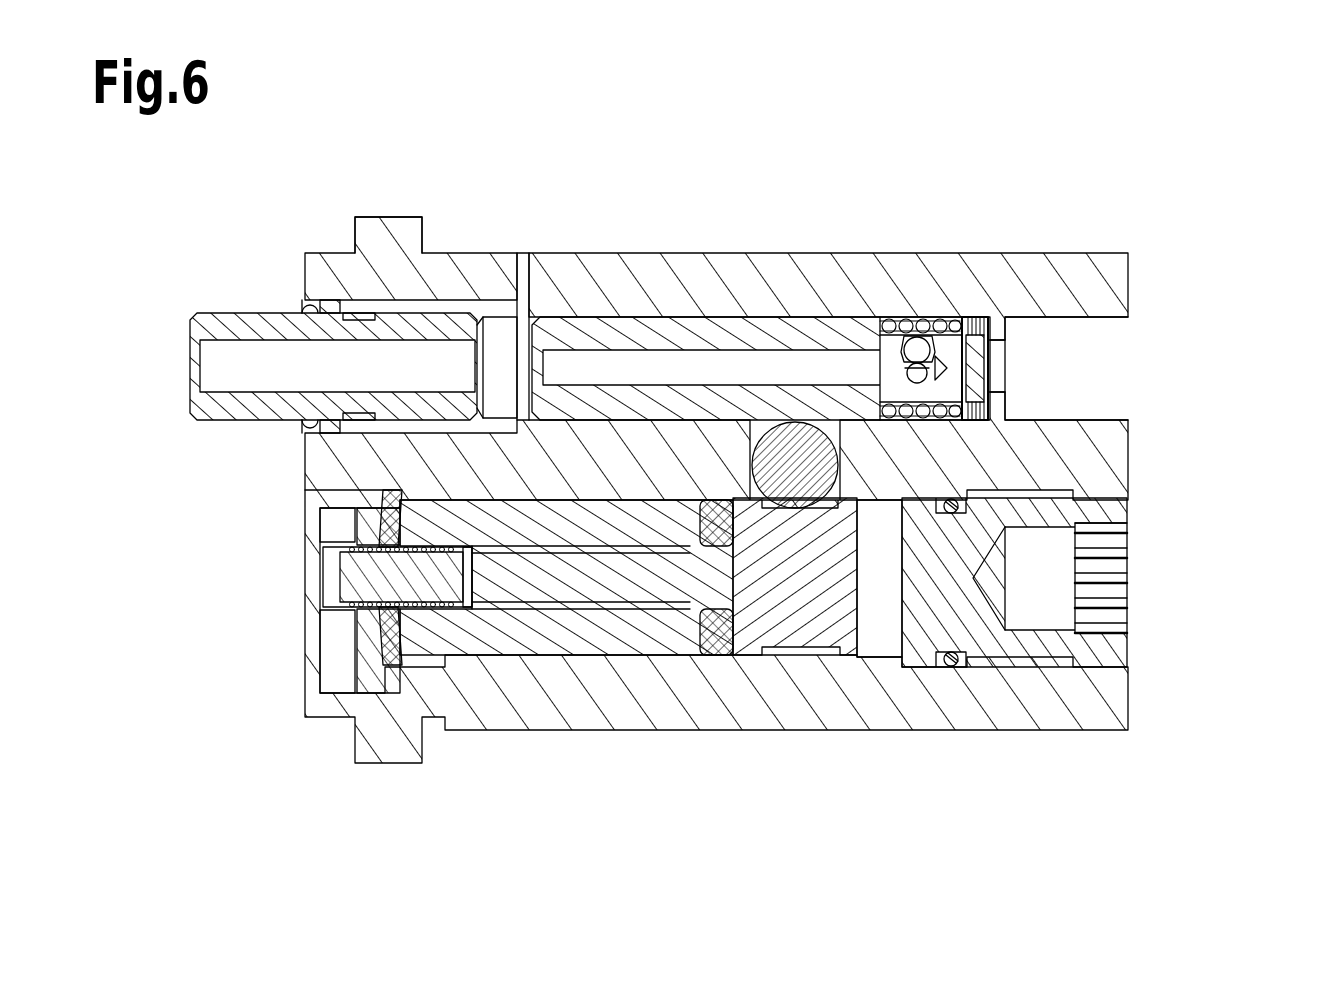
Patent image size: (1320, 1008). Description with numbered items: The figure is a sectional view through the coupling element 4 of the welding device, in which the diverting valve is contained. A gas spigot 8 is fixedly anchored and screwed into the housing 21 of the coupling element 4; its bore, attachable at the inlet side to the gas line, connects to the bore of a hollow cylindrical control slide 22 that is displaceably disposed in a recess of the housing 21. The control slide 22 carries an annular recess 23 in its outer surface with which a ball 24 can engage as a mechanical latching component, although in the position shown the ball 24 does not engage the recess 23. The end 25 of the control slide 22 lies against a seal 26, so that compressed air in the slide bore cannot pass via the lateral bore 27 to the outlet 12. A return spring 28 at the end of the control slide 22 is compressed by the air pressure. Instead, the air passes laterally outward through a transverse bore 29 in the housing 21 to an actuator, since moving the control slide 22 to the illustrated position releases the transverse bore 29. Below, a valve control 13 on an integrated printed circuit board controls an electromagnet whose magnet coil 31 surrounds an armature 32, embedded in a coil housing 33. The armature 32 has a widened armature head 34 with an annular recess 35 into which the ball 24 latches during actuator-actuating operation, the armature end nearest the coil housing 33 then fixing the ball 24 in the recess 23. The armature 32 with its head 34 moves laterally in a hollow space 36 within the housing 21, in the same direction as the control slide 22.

The coupling element 4 is at (1192, 782).
The gas spigot 8 is at (230, 327).
The outlet 12 is at (1073, 355).
The valve control 13 is at (372, 663).
The housing 21 is at (380, 248).
The hollow control slide 22 is at (634, 330).
The annular recess 23 is at (858, 323).
The ball 24 is at (813, 465).
The end 25 is at (963, 368).
The seal 26 is at (973, 327).
The lateral bore 27 is at (923, 353).
The return spring 28 is at (918, 313).
The transverse bore 29 is at (523, 265).
The magnet coil 31 is at (508, 637).
The armature 32 is at (643, 582).
The coil housing 33 is at (715, 630).
The armature head 34 is at (782, 620).
The annular recess 35 is at (793, 650).
The hollow space 36 is at (882, 638).